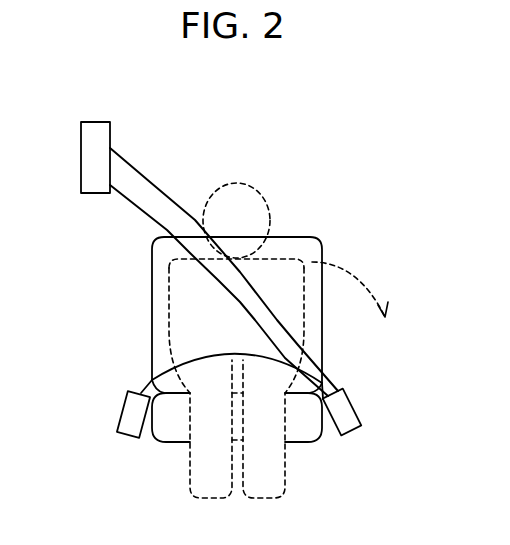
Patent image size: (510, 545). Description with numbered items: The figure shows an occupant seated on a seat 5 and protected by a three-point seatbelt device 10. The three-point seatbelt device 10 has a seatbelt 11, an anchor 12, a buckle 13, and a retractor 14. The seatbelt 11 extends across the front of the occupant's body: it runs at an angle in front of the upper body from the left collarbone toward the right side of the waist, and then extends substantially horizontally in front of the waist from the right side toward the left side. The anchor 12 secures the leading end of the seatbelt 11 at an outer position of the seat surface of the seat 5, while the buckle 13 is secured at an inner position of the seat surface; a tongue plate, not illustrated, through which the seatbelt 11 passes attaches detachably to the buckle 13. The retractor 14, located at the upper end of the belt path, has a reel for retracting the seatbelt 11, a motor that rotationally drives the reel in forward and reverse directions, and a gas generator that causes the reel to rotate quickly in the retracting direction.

The seat 5 is at (306, 434).
The three-point seatbelt device 10 is at (192, 160).
The seatbelt 11 is at (148, 195).
The anchor 12 is at (132, 420).
The buckle 13 is at (348, 413).
The retractor 14 is at (95, 146).